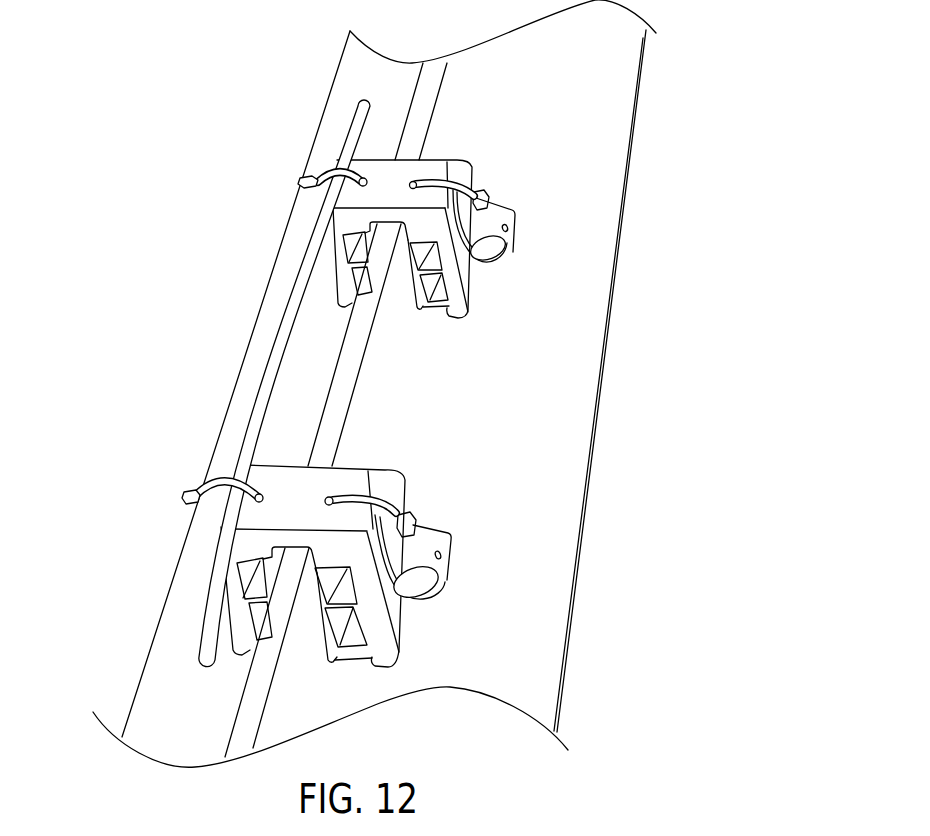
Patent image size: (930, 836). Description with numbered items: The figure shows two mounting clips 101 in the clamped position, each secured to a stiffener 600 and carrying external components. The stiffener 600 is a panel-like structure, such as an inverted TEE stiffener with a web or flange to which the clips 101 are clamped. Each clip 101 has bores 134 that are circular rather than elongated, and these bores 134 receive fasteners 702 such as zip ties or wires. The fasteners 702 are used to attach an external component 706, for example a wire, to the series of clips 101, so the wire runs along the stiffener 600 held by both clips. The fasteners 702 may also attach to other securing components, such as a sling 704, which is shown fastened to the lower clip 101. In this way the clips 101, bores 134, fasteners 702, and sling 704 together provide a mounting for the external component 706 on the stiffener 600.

The clip 101 is at (383, 173).
The bore 134 is at (410, 188).
The stiffener 600 is at (447, 113).
The fastener 702 is at (233, 487).
The sling 704 is at (423, 552).
The external component 706 is at (268, 368).